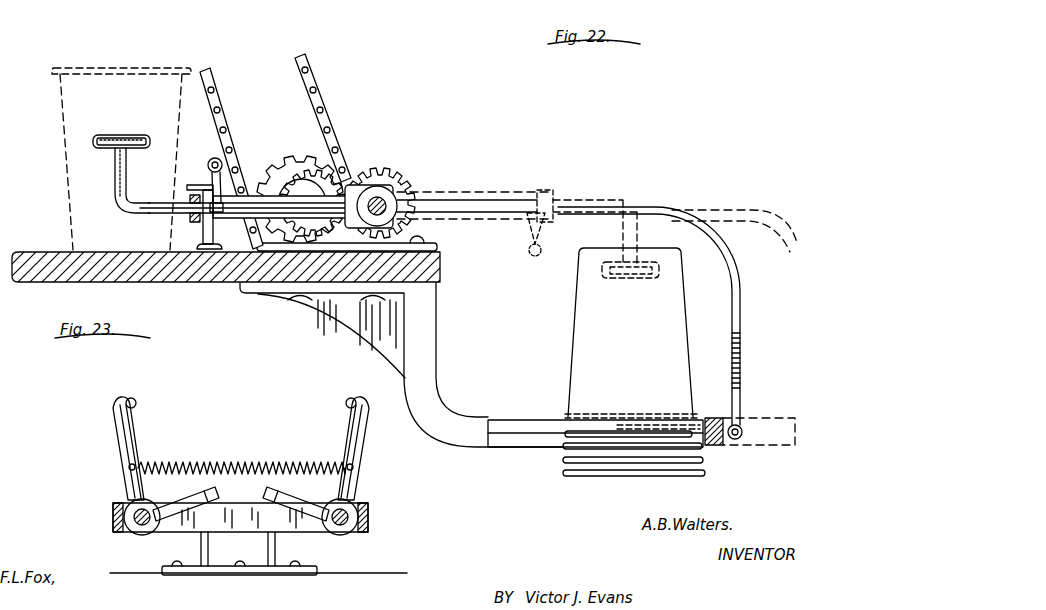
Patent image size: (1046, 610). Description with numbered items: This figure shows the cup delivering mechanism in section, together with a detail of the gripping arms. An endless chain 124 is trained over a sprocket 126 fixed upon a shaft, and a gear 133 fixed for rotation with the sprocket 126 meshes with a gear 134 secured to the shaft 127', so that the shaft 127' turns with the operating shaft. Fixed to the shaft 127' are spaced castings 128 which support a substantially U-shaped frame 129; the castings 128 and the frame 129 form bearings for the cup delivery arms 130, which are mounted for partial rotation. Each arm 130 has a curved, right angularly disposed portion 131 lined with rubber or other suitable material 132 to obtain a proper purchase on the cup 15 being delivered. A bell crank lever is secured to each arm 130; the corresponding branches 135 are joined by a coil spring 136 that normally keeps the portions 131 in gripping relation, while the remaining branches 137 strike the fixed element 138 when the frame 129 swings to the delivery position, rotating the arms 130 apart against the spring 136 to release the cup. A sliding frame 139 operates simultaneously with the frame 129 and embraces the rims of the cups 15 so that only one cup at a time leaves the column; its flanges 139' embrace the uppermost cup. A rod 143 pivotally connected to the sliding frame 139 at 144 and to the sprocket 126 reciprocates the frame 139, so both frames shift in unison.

In FIG. 22, the cups 15 is at (372, 242).
In FIG. 22, the endless chain 124 is at (313, 83).
In FIG. 22, the sprocket 126 is at (279, 170).
In FIG. 22, the shaft 127' is at (517, 215).
In FIG. 22, the spaced castings 128 is at (390, 183).
In FIG. 22, the U-shaped frame 129 is at (262, 218).
In FIG. 23, the U-shaped frame 129 is at (298, 525).
In FIG. 22, the cup delivery arms 130 is at (145, 200).
In FIG. 23, the cup delivery arms 130 is at (138, 532).
In FIG. 22, the right angularly disposed portion 131 is at (120, 172).
In FIG. 23, the right angularly disposed portion 131 is at (130, 443).
In FIG. 22, the rubber lining 132 is at (128, 136).
In FIG. 23, the rubber lining 132 is at (148, 392).
In FIG. 22, the gear 133 is at (313, 183).
In FIG. 22, the gear 134 is at (385, 207).
In FIG. 23, the bell crank lever branches 135 is at (130, 478).
In FIG. 23, the coil spring 136 is at (247, 463).
In FIG. 23, the bell crank lever branches 137 is at (185, 497).
In FIG. 23, the fixed element 138 is at (270, 537).
In FIG. 22, the sliding frame 139 is at (595, 414).
In FIG. 22, the flanges 139' is at (746, 405).
In FIG. 22, the rod 143 is at (665, 208).
In FIG. 22, the pivotal connection 144 is at (739, 429).